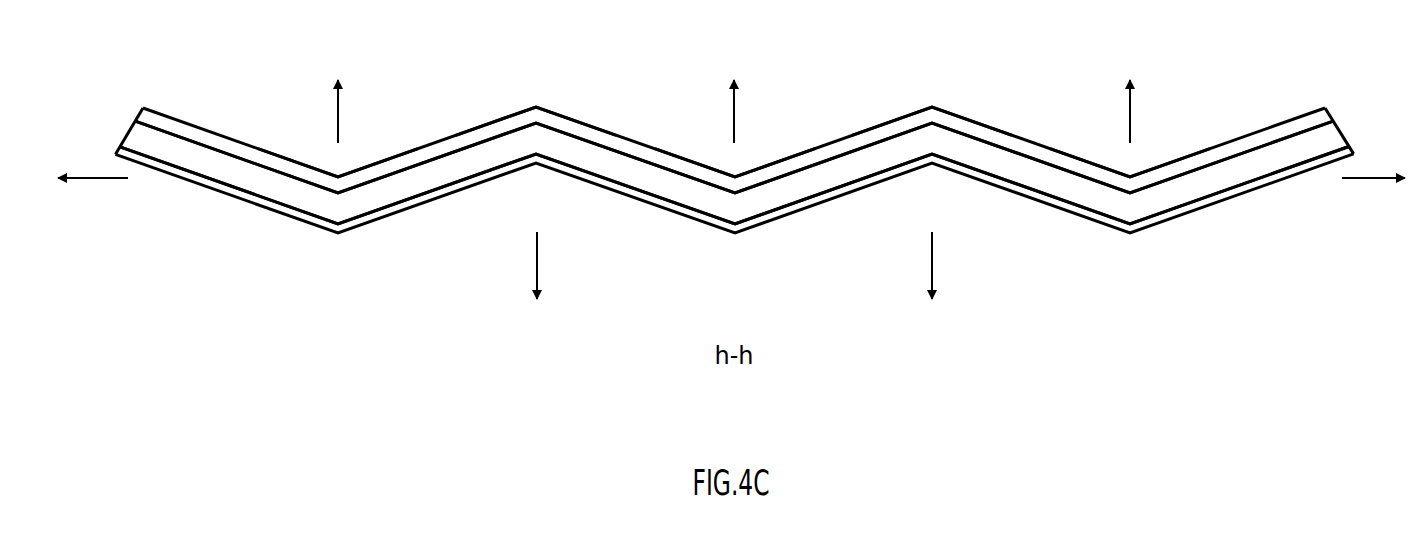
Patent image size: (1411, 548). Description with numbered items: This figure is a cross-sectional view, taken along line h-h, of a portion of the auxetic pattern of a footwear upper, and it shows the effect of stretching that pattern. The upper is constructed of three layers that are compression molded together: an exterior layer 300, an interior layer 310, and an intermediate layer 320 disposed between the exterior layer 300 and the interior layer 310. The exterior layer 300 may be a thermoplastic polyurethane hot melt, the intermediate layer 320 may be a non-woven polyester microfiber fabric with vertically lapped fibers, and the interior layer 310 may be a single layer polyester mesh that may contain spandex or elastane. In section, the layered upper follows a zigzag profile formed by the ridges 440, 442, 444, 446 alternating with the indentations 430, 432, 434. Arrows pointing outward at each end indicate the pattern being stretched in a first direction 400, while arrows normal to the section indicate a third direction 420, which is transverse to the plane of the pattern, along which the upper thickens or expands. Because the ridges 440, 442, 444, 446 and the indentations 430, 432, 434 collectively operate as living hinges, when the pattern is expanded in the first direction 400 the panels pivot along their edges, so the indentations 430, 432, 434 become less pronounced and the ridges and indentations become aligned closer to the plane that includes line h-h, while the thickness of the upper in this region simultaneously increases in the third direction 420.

The exterior layer 300 is at (172, 117).
The interior layer 310 is at (183, 178).
The intermediate layer 320 is at (120, 137).
The first direction 400 is at (105, 178).
The third direction 420 is at (338, 127).
The indentation 430 is at (326, 162).
The indentation 432 is at (718, 156).
The indentation 434 is at (1116, 155).
The ridge 440 is at (146, 108).
The ridge 442 is at (536, 106).
The ridge 444 is at (932, 106).
The ridge 446 is at (1323, 110).